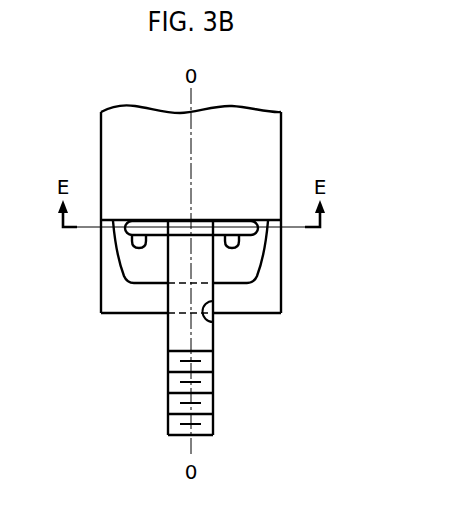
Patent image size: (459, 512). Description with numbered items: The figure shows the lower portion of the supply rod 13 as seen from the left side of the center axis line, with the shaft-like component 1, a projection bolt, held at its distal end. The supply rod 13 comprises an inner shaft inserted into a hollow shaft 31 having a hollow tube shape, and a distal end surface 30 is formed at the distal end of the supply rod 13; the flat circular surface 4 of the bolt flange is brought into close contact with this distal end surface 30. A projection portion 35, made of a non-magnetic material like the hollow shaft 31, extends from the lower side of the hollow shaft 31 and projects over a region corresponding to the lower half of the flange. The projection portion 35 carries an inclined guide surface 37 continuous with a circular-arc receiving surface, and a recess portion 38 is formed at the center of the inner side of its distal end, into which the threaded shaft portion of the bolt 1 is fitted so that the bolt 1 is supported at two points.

The shaft-like component 1 is at (154, 383).
The surface 4 is at (203, 220).
The supply rod 13 is at (94, 135).
The distal end surface 30 is at (155, 220).
The hollow shaft 31 is at (268, 138).
The projection portion 35 is at (108, 302).
The inclined guide surface 37 is at (130, 259).
The recess portion 38 is at (213, 322).